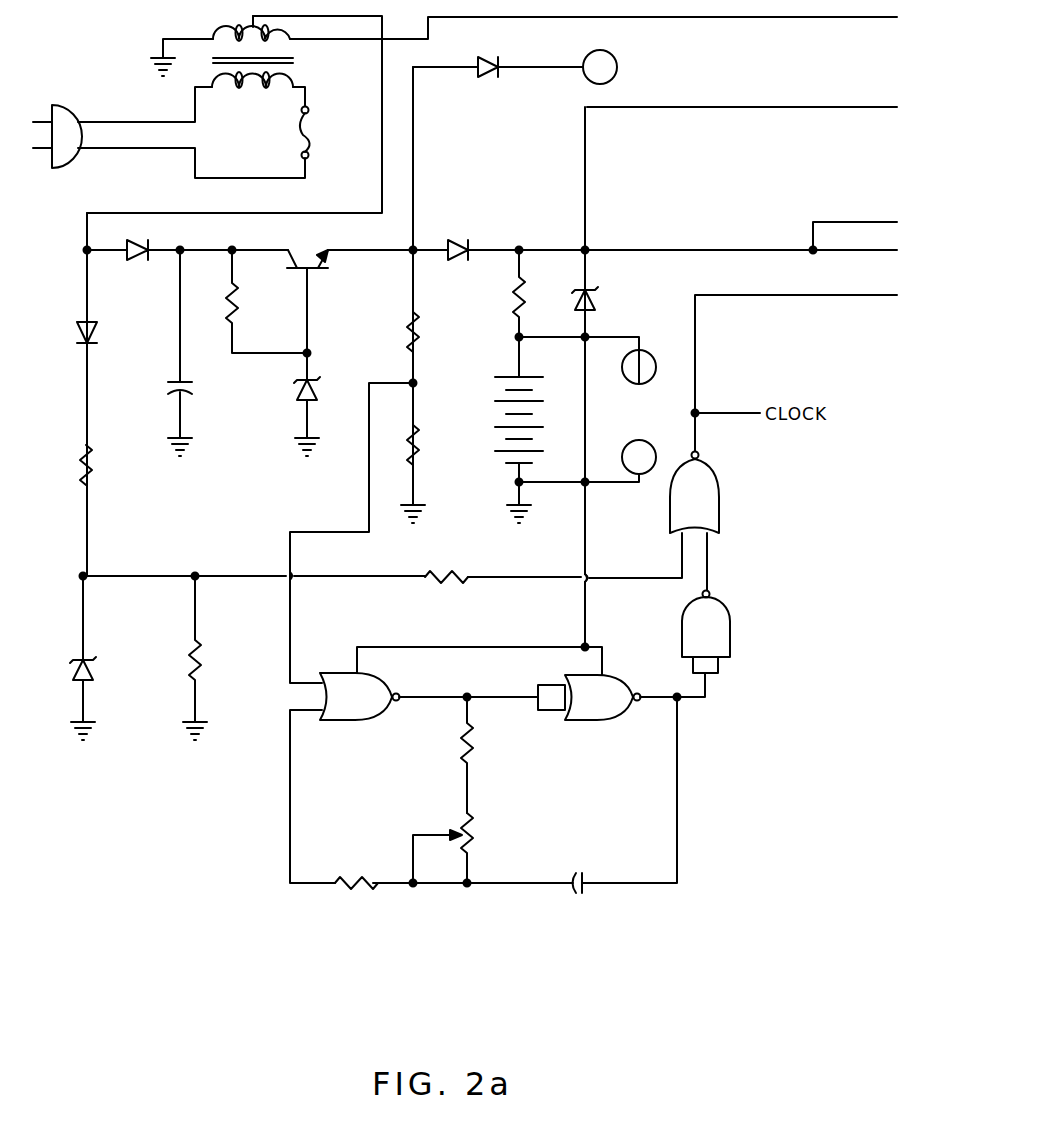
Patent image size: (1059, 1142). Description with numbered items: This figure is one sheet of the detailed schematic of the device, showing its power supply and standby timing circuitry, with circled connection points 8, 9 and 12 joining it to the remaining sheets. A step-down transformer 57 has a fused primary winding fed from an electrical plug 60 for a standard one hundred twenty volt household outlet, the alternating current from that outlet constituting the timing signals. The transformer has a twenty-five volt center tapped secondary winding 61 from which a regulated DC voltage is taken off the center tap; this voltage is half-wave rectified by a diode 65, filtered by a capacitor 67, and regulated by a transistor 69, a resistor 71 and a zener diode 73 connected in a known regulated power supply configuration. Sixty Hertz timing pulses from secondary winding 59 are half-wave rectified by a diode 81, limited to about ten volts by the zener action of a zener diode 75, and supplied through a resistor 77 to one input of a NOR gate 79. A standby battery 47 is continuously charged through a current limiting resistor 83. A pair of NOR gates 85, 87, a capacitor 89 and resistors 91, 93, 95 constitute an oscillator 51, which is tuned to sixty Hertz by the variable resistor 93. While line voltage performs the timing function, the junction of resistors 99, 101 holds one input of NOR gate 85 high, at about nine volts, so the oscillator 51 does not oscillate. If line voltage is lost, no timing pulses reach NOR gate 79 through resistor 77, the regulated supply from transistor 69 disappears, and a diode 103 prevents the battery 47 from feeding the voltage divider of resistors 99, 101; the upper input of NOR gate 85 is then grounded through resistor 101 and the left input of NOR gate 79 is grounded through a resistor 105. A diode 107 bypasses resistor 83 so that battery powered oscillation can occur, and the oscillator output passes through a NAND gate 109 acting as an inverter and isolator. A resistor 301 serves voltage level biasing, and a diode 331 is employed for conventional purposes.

The step-down transformer 57 is at (216, 70).
The center tapped secondary winding 61 is at (278, 46).
The secondary winding 59 is at (252, 99).
The electrical plug 60 is at (70, 112).
The diode 331 is at (488, 57).
The terminal 12 is at (600, 67).
The diode 65 is at (141, 263).
The capacitor 67 is at (170, 388).
The transistor 69 is at (310, 262).
The resistor 71 is at (240, 307).
The zener diode 73 is at (296, 386).
The diode 81 is at (75, 335).
The resistor 301 is at (78, 456).
The zener diode 75 is at (95, 659).
The resistor 105 is at (205, 660).
The resistor 77 is at (450, 572).
The resistor 99 is at (405, 330).
The resistor 101 is at (420, 437).
The diode 103 is at (462, 240).
The current limiting resistor 83 is at (514, 306).
The standby battery 47 is at (495, 405).
The diode 107 is at (597, 297).
The terminal 8 is at (639, 367).
The terminal 9 is at (639, 457).
The NOR gate 79 is at (716, 482).
The NAND gate 109 is at (728, 624).
The NOR gate 85 is at (350, 722).
The NOR gate 87 is at (597, 722).
The resistor 91 is at (474, 743).
The variable resistor 93 is at (476, 832).
The resistor 95 is at (346, 890).
The capacitor 89 is at (579, 895).
The oscillator 51 is at (458, 899).